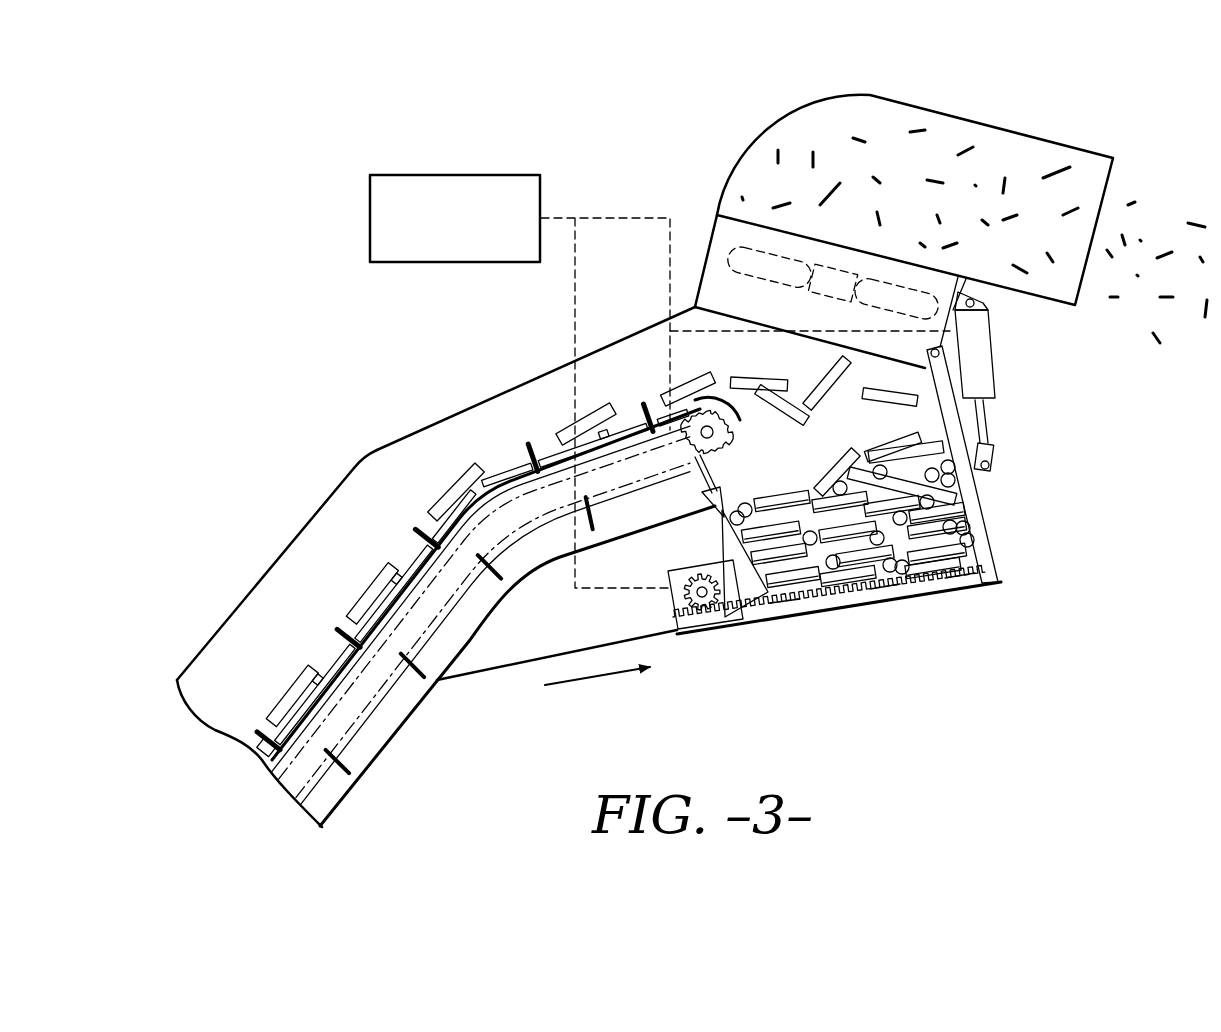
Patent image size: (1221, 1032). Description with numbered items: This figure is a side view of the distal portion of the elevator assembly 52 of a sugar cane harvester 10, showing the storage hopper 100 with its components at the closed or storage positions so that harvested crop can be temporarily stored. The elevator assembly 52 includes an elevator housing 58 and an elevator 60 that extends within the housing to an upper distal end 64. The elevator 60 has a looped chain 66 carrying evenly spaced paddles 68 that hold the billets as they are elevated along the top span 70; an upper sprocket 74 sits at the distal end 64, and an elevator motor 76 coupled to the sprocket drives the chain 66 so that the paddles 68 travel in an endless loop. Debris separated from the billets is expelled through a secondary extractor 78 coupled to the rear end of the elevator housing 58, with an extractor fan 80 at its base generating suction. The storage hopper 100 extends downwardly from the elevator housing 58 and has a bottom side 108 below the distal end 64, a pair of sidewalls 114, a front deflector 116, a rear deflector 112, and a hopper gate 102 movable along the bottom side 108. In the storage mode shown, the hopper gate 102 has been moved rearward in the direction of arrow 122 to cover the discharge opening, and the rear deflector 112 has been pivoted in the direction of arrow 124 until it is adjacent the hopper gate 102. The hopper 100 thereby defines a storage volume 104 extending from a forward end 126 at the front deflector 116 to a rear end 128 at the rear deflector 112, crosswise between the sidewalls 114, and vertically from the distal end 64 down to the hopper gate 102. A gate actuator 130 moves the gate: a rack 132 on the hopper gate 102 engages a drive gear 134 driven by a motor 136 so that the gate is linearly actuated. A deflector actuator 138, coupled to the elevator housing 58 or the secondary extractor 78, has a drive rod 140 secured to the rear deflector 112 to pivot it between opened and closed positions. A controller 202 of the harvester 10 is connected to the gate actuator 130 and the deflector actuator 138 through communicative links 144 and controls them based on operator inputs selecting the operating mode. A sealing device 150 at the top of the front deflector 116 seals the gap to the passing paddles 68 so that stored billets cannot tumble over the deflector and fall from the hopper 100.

The harvester 10 is at (287, 405).
The elevator assembly 52 is at (198, 641).
The elevator housing 58 is at (253, 577).
The top span 70 is at (317, 543).
The elevator 60 is at (353, 730).
The looped chain 66 is at (405, 693).
The paddles 68 is at (530, 445).
The upper sprocket 74 is at (733, 420).
The elevator motor 76 is at (688, 386).
The distal end 64 is at (690, 366).
The secondary extractor 78 is at (980, 121).
The extractor fan 80 is at (763, 247).
The storage hopper 100 is at (912, 487).
The hopper gate 102 is at (840, 610).
The storage volume 104 is at (983, 537).
The bottom side 108 is at (509, 667).
The rear deflector 112 is at (983, 501).
The sidewalls 114 is at (871, 437).
The front deflector 116 is at (740, 590).
The arrow 122 is at (583, 685).
The arrow 124 is at (1039, 430).
The forward end 126 is at (777, 583).
The rear end 128 is at (958, 588).
The gate actuator 130 is at (651, 625).
The rack 132 is at (883, 585).
The drive gear 134 is at (690, 597).
The motor 136 is at (680, 570).
The deflector actuator 138 is at (995, 362).
The drive rod 140 is at (990, 420).
The communicative links 144 is at (640, 217).
The sealing device 150 is at (722, 488).
The controller 202 is at (454, 171).